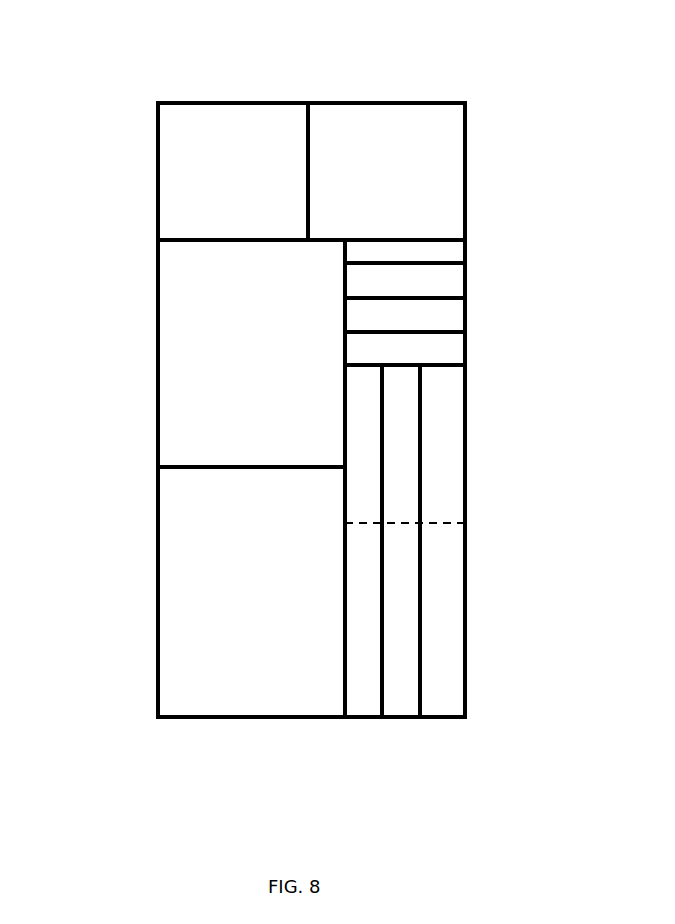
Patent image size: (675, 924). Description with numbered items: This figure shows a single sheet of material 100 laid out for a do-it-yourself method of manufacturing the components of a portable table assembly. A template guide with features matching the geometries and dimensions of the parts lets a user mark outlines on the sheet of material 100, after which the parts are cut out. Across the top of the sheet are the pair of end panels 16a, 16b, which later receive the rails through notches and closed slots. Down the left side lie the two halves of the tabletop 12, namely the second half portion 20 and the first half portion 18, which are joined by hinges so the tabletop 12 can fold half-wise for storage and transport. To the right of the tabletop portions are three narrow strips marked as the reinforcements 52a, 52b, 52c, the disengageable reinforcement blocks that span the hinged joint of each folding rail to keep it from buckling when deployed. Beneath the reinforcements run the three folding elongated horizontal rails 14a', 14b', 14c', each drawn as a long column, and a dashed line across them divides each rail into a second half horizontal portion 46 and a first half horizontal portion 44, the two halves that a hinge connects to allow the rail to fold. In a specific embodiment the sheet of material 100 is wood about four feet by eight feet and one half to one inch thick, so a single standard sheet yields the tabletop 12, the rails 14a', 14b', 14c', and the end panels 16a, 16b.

The single sheet of material 100 is at (129, 54).
The end panel 16a is at (158, 130).
The end panel 16b is at (388, 103).
The second half portion 20 is at (158, 345).
The first half portion 18 is at (158, 602).
The reinforcement 52a is at (465, 290).
The reinforcement 52b is at (465, 318).
The reinforcement 52c is at (465, 348).
The second half horizontal portion 46 is at (467, 455).
The first half horizontal portion 44 is at (467, 615).
The folding elongated horizontal rail 14a' is at (344, 580).
The folding elongated horizontal rail 14b' is at (387, 580).
The folding elongated horizontal rail 14c' is at (436, 580).
The tabletop 12 is at (217, 741).